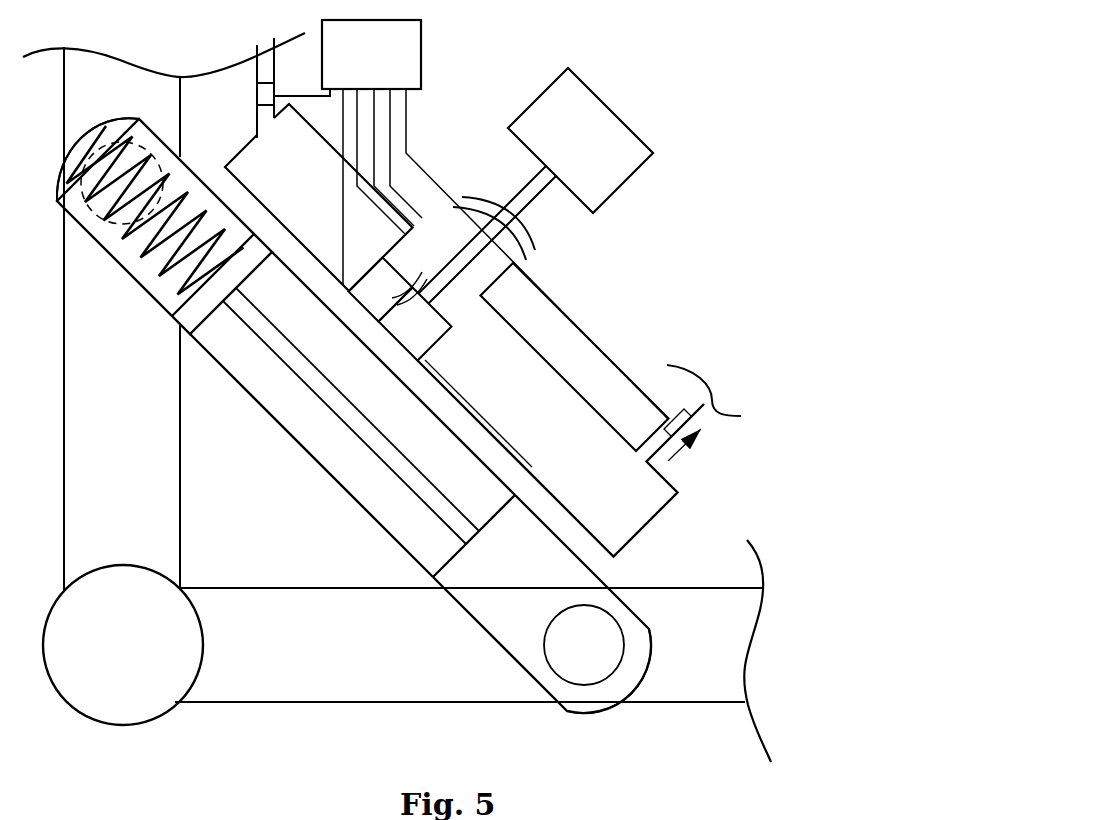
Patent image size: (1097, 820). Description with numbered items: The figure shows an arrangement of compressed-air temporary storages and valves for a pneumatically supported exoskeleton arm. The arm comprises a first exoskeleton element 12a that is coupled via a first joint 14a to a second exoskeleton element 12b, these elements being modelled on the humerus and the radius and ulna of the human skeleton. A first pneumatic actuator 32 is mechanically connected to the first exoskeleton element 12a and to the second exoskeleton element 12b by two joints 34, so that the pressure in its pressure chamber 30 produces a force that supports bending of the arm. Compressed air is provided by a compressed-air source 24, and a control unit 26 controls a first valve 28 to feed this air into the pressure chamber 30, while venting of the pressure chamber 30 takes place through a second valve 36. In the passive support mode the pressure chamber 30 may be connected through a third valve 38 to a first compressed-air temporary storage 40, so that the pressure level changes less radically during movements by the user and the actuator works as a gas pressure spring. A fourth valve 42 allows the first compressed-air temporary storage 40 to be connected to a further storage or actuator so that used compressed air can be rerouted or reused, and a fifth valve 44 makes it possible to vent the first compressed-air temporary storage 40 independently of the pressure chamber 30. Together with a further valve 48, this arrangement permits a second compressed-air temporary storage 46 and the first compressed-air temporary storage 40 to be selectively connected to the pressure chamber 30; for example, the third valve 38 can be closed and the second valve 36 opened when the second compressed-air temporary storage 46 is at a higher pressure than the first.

The first exoskeleton element 12a is at (217, 508).
The second exoskeleton element 12b is at (705, 547).
The first joint 14a is at (159, 741).
The compressed-air source 24 is at (627, 102).
The control unit 26 is at (472, 31).
The first valve 28 is at (487, 267).
The pressure chamber 30 is at (211, 390).
The first pneumatic actuator 32 is at (625, 312).
The joints 34 is at (158, 126).
The second valve 36 is at (386, 288).
The third valve 38 is at (458, 343).
The first compressed-air temporary storage 40 is at (580, 356).
The fourth valve 42 is at (710, 430).
The fifth valve 44 is at (405, 338).
The second compressed-air temporary storage 46 is at (418, 125).
The valve 48 is at (252, 82).